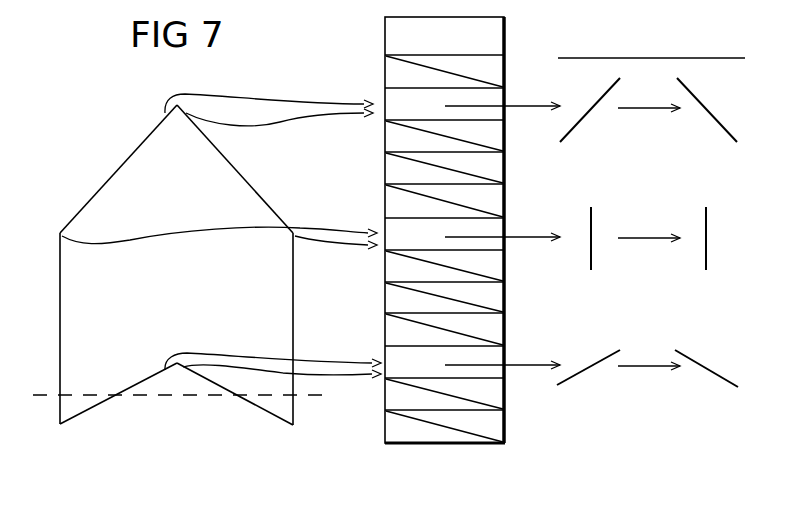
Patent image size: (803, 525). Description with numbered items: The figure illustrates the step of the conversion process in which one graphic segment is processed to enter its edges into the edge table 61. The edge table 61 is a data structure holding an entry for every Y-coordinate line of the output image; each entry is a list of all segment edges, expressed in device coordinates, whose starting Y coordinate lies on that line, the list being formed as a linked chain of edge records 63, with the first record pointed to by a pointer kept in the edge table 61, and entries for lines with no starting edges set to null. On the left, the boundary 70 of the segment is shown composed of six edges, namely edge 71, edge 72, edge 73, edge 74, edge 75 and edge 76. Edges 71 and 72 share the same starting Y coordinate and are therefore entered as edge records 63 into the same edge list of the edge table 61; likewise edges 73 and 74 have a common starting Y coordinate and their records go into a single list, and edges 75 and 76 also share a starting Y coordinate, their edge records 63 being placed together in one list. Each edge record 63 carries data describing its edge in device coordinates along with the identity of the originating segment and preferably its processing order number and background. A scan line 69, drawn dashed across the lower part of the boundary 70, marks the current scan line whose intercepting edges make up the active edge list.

The edge table 61 is at (394, 446).
The edge record 63 is at (575, 129).
The scan line 69 is at (47, 397).
The boundary 70 is at (176, 278).
The edge 71 is at (118, 172).
The edge 72 is at (241, 176).
The edge 73 is at (61, 310).
The edge 74 is at (292, 310).
The edge 75 is at (93, 408).
The edge 76 is at (264, 411).